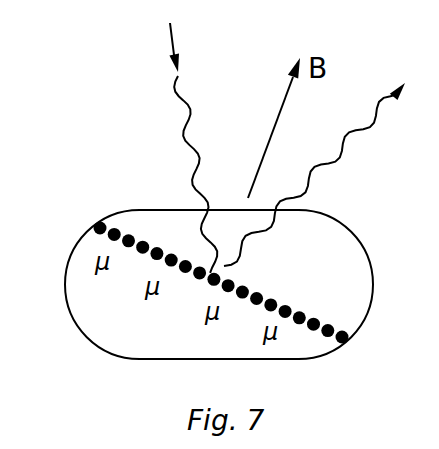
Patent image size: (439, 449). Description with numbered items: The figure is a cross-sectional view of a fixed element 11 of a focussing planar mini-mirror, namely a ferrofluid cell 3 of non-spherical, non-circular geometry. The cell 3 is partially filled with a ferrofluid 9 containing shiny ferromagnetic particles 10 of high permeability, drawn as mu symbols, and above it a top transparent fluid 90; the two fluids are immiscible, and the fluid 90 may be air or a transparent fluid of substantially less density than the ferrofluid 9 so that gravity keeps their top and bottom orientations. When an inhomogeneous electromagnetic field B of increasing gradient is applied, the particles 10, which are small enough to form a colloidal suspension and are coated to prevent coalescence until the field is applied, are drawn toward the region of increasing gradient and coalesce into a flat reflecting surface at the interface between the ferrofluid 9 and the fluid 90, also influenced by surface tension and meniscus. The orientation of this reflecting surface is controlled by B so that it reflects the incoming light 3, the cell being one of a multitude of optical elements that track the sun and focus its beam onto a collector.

The ferrofluid cell 3 is at (178, 99).
The shiny ferromagnetic particles 10 is at (183, 251).
The top transparent fluid 90 is at (340, 243).
The ferrofluid 9 is at (140, 337).
The fixed element 11 is at (56, 348).